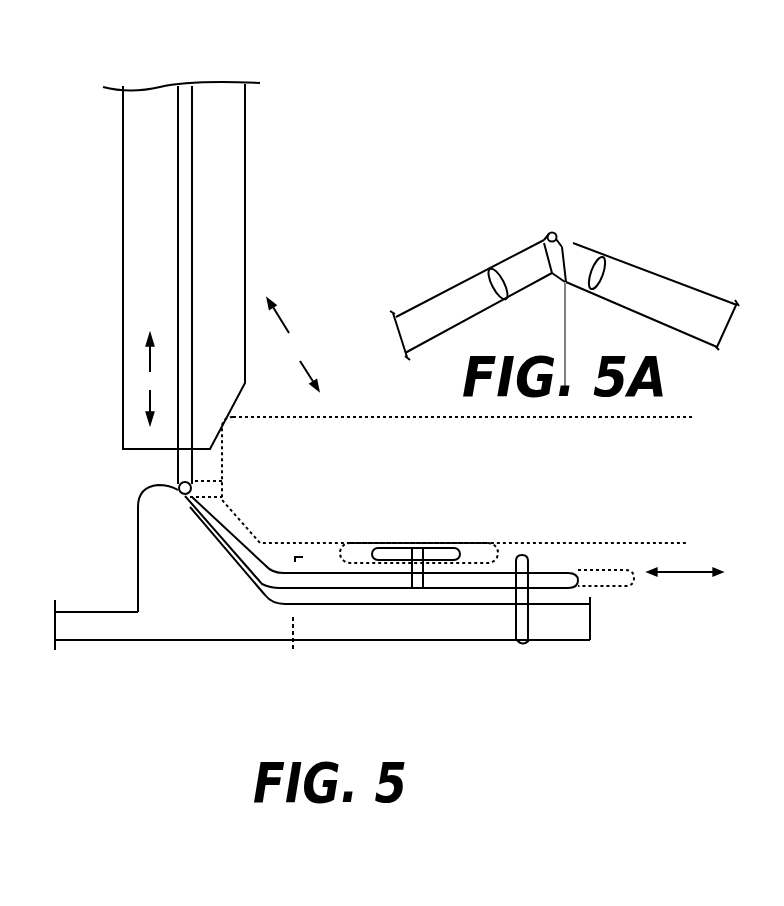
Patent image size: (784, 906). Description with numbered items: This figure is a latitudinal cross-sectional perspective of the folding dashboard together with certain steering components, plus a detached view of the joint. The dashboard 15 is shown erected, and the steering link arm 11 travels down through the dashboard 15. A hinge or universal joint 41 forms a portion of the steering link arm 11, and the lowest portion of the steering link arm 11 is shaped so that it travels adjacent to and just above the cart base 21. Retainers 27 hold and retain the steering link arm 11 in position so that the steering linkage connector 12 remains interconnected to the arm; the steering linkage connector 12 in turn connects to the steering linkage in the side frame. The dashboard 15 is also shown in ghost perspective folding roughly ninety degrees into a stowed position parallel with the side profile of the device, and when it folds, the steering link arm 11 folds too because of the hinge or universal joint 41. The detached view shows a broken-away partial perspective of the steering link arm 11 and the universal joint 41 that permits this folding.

In FIG. 5, the steering link arm 11 is at (186, 260).
In FIG. 5-A, the steering link arm 11 is at (440, 300).
In FIG. 5, the steering linkage connector 12 is at (440, 553).
In FIG. 5, the dashboard 15 is at (224, 177).
In FIG. 5, the cart base 21 is at (440, 622).
In FIG. 5, the retainers 27 is at (300, 648).
In FIG. 5, the hinge or universal joint 41 is at (179, 487).
In FIG. 5-A, the hinge or universal joint 41 is at (540, 243).